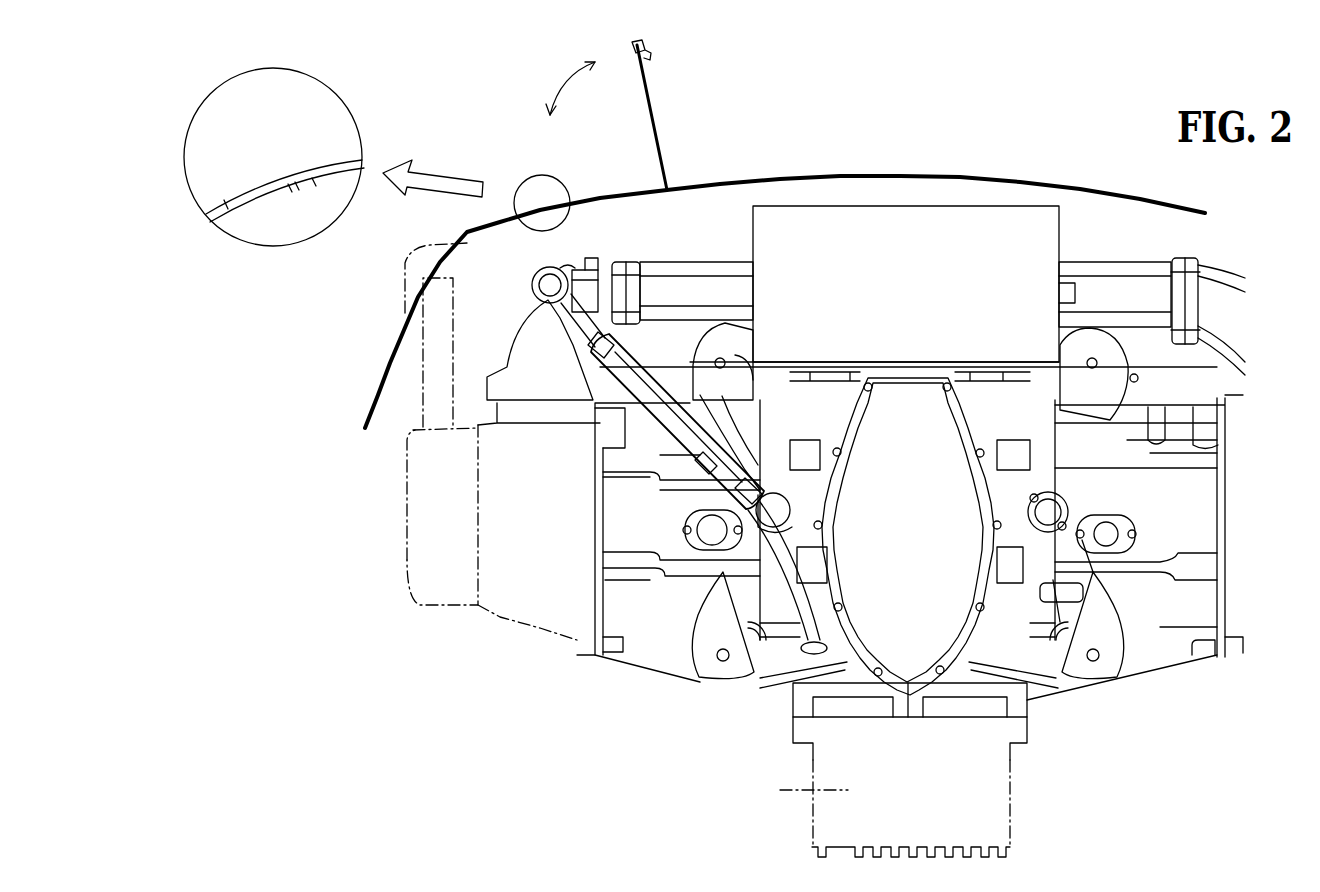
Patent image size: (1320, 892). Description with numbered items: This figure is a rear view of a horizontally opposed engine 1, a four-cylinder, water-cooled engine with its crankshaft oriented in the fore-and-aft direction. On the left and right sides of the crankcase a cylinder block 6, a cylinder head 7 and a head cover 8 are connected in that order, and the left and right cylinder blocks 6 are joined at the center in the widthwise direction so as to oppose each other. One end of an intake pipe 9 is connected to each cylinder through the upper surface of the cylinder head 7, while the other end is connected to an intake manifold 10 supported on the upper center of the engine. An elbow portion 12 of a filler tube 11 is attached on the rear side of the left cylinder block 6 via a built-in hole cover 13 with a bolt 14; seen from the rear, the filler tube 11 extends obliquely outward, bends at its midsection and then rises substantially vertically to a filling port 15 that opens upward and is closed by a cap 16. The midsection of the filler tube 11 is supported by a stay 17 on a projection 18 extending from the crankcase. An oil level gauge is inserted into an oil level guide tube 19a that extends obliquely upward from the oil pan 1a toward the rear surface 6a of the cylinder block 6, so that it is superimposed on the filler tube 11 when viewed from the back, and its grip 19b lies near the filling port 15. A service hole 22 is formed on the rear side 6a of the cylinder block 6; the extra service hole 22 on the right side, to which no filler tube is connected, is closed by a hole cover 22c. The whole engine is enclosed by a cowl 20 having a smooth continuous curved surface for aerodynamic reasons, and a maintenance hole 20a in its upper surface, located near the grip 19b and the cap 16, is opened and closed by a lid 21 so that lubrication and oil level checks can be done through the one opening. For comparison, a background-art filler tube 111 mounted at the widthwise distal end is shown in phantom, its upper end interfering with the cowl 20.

The horizontally opposed engine 1 is at (1067, 710).
The oil pan 1a is at (800, 793).
The cylinder block 6 is at (663, 655).
The rear surface of the cylinder block 6a is at (758, 677).
The cylinder head 7 is at (543, 618).
The head cover 8 is at (440, 603).
The intake pipe 9 is at (660, 268).
The intake manifold 10 is at (915, 218).
The filler tube 11 is at (593, 408).
The elbow portion 12 is at (692, 510).
The hole cover 13 is at (827, 530).
The bolt 14 is at (790, 483).
The filling port 15 is at (572, 270).
The cap 16 is at (583, 262).
The stay 17 is at (672, 268).
The projection 18 is at (722, 325).
The oil level guide tube 19a is at (703, 462).
The grip 19b is at (533, 282).
The cowl 20 is at (244, 196).
The maintenance hole 20a is at (345, 166).
The lid 21 is at (648, 92).
The service hole 22 is at (1097, 505).
The hole cover 22c is at (1065, 508).
The filler tube 111 is at (420, 355).